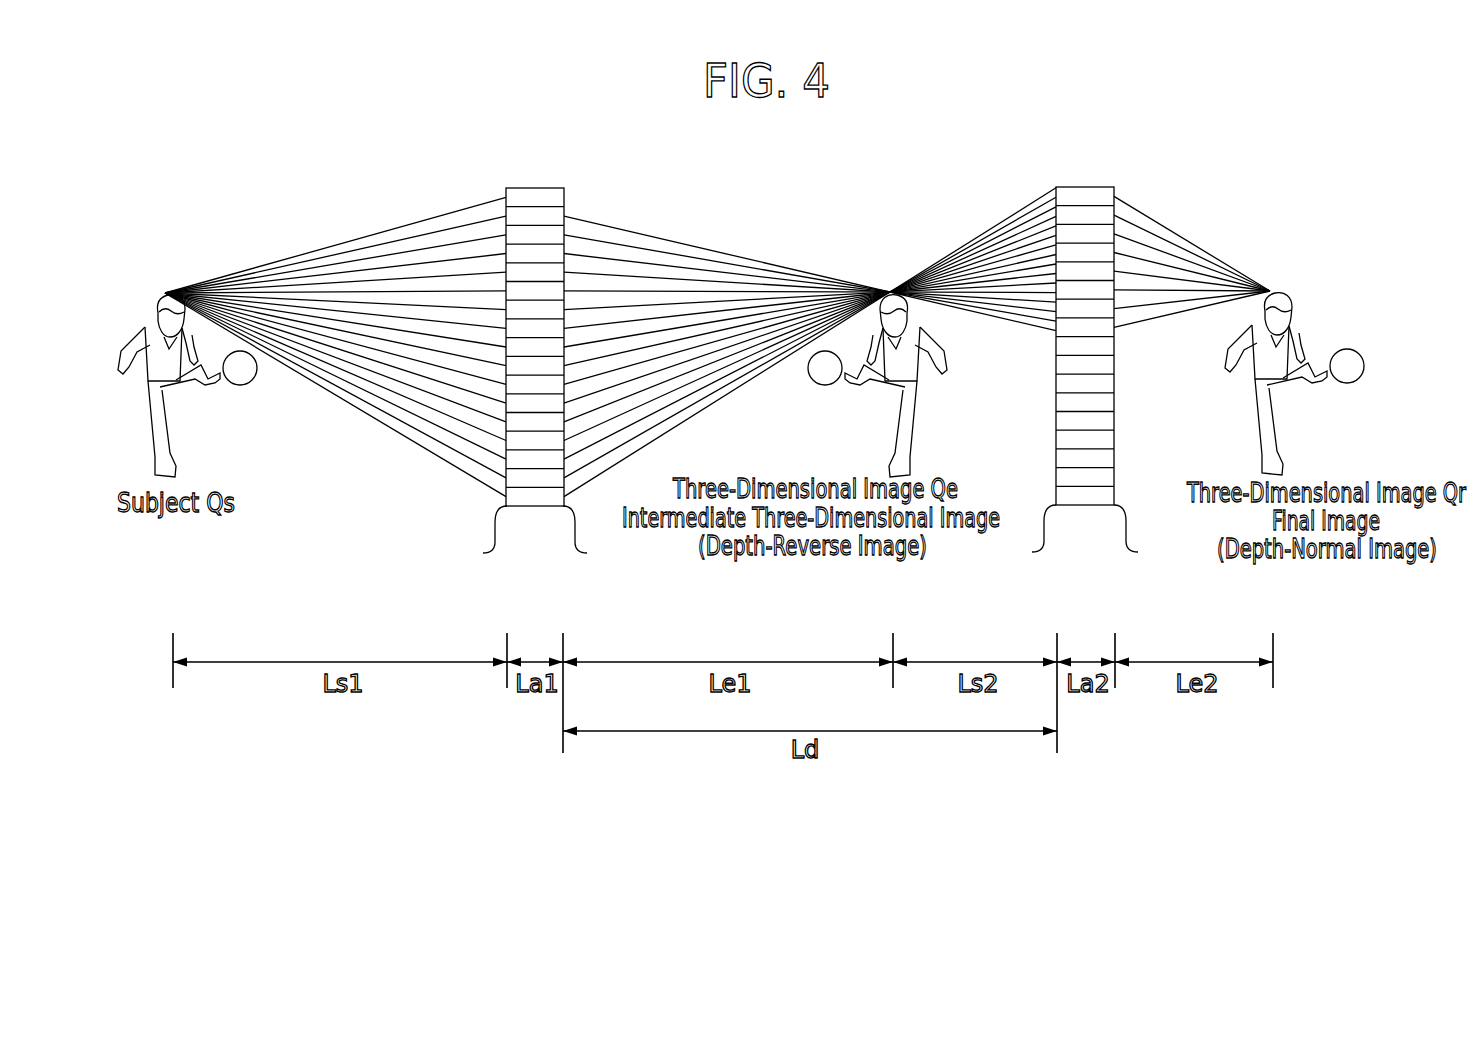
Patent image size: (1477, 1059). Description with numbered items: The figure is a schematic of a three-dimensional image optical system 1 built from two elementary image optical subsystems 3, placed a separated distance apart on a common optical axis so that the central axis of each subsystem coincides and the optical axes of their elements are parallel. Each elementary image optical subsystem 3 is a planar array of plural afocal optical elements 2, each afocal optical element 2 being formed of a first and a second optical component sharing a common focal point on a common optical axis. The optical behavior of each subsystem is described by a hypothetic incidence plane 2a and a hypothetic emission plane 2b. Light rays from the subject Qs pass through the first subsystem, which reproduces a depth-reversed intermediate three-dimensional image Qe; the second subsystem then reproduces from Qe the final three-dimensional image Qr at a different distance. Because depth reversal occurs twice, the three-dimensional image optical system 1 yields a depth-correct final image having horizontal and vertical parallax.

The three-dimensional image optical system 1 is at (873, 205).
The afocal optical element 2 is at (550, 199).
The elementary image optical subsystem 3 is at (468, 196).
The hypothetic incidence plane 2a is at (753, 538).
The hypothetic emission plane 2b is at (869, 538).